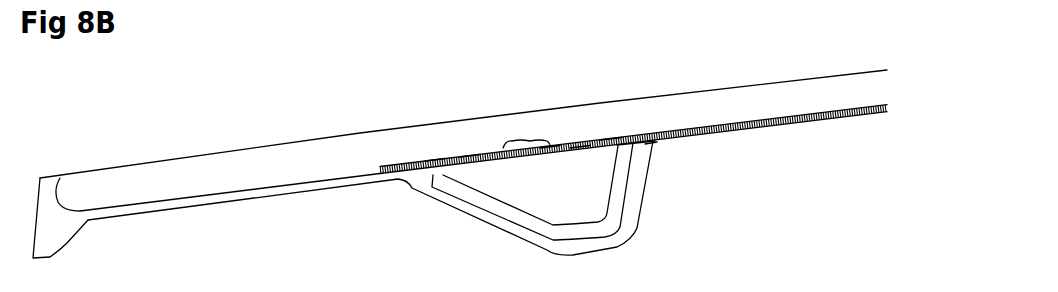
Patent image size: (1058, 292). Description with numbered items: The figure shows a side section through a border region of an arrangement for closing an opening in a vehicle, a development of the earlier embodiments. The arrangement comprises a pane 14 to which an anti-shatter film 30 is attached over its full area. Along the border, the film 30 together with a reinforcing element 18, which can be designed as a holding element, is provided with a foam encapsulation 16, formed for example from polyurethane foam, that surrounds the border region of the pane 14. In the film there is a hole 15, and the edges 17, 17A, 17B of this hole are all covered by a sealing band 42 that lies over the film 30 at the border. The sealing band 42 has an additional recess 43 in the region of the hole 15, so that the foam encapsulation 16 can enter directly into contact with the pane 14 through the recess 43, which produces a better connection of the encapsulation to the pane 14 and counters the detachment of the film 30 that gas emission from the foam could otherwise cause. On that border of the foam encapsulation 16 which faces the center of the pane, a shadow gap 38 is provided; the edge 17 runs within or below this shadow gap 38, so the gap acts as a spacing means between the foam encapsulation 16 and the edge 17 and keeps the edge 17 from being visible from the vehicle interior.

The pane 14 is at (813, 95).
The anti-shatter film 30 is at (449, 158).
The foam encapsulation 16 is at (413, 184).
The reinforcing element 18 is at (487, 204).
The edge 17A is at (435, 156).
The edge 17B is at (468, 155).
The recess 43 is at (517, 142).
The hole 15 is at (558, 127).
The edge 17 is at (611, 136).
The sealing band 42 is at (580, 144).
The shadow gap 38 is at (667, 138).